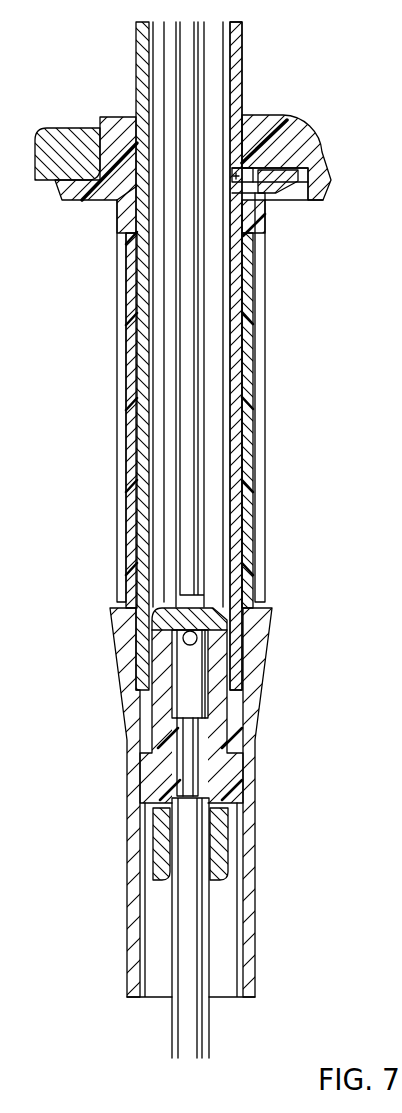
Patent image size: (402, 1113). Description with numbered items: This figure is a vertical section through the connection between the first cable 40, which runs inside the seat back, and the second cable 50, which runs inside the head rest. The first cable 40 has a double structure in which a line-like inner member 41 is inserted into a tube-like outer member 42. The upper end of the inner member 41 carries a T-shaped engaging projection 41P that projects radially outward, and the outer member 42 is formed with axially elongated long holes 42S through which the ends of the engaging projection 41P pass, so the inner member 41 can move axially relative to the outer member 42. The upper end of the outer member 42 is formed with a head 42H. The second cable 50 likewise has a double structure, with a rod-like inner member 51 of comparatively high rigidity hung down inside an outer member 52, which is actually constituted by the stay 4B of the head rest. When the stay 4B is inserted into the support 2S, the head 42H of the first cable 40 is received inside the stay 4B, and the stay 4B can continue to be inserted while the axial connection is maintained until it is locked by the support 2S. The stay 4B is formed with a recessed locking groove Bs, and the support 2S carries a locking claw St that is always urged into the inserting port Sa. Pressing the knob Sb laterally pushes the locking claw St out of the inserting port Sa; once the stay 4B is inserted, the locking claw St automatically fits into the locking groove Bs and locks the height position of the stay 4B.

The knob Sb is at (65, 135).
The inserting port Sa is at (157, 137).
The locking groove Bs is at (233, 179).
The locking claw St is at (250, 183).
The support 2S is at (312, 145).
The second cable 50 is at (257, 356).
The inner member 51 is at (187, 352).
The stay 4B is at (233, 398).
The outer member 52 is at (236, 356).
The head 42H is at (199, 613).
The first cable 40 is at (236, 774).
The inner member 41 is at (190, 742).
The engaging projection 41P is at (183, 637).
The long hole 42S is at (204, 733).
The outer member 42 is at (197, 927).